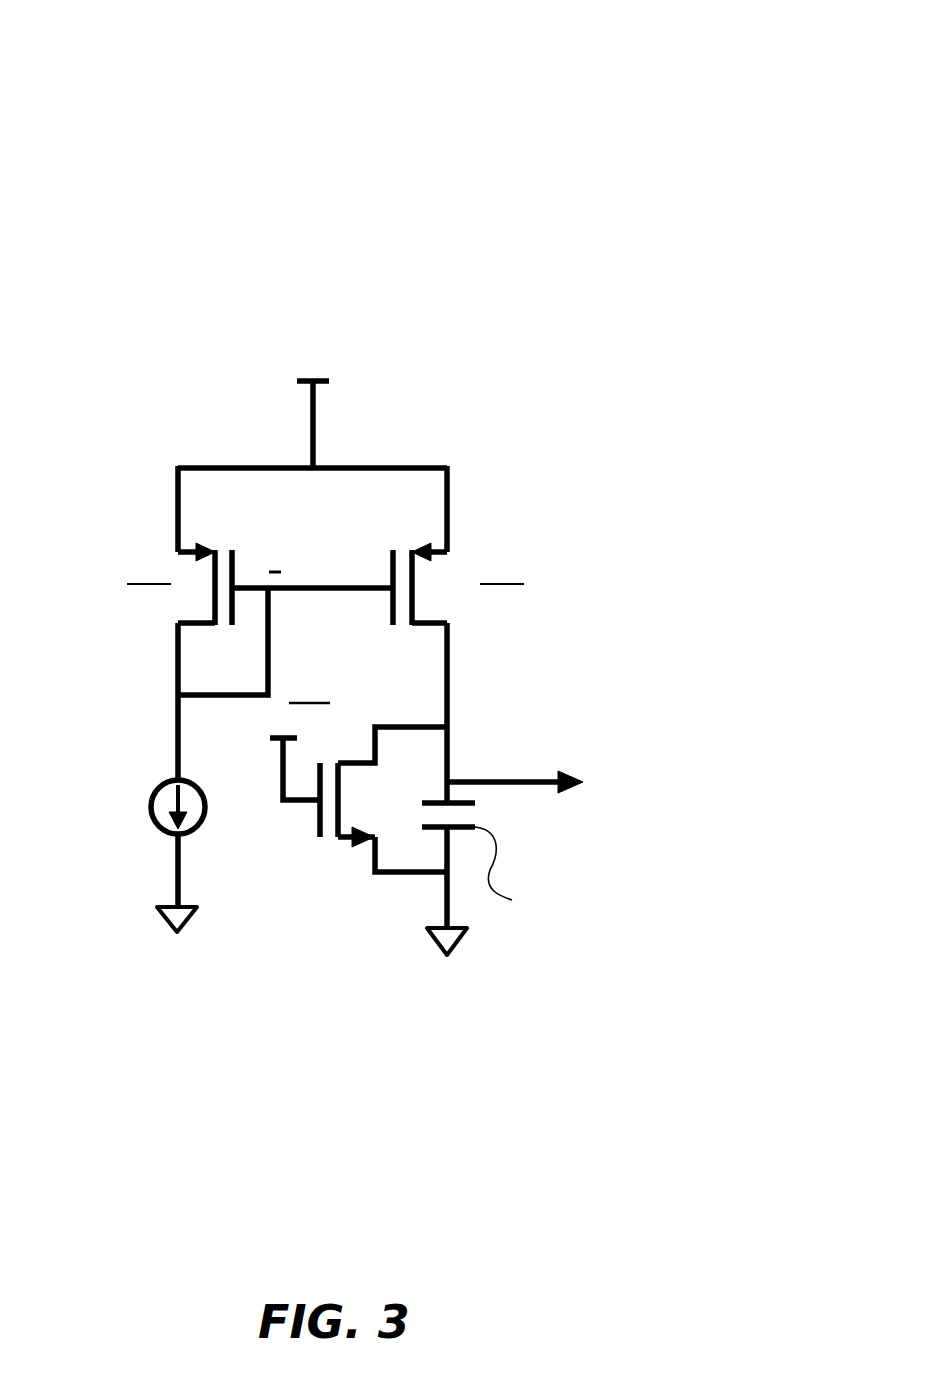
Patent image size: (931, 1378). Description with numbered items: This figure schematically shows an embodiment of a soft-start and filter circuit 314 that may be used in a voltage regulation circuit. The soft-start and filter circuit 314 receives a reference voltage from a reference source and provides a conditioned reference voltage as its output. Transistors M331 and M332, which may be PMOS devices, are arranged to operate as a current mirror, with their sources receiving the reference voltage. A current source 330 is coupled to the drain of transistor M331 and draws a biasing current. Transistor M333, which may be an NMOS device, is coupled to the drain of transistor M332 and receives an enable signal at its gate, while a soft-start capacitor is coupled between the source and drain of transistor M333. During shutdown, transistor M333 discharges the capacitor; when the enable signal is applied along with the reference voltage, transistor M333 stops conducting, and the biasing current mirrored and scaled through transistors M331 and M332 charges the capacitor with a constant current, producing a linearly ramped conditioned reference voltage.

The soft-start and filter circuit 314 is at (533, 86).
The current source 330 is at (160, 832).
The transistor M331 is at (233, 603).
The transistor M332 is at (392, 585).
The transistor M333 is at (320, 830).